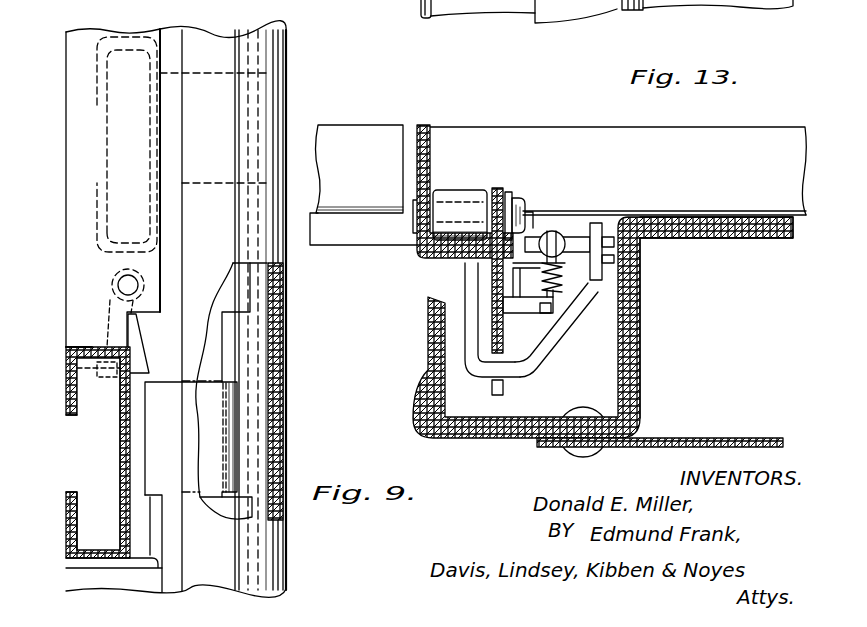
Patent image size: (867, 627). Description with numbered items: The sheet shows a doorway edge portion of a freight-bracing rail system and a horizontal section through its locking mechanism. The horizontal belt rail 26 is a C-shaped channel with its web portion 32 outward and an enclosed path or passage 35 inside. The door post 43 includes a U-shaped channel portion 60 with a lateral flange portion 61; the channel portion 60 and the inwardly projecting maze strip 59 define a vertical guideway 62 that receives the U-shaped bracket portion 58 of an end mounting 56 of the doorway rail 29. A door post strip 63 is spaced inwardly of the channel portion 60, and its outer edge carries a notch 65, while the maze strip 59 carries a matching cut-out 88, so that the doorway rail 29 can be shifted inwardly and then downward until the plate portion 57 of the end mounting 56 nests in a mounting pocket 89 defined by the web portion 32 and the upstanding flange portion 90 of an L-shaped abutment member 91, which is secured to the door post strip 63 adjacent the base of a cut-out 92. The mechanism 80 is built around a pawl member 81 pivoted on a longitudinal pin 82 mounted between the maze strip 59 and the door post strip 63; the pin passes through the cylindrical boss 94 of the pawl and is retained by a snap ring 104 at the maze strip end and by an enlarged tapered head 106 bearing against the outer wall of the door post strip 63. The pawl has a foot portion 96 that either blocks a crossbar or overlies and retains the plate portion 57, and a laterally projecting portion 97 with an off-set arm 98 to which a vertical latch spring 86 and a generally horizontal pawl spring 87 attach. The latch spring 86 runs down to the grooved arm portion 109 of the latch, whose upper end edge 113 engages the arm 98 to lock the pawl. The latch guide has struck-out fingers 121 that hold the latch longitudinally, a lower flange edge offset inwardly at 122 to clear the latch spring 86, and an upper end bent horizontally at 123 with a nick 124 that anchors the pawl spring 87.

In FIG. 9, the belt rail 26 is at (66, 374).
In FIG. 13, the belt rail 26 is at (541, 127).
In FIG. 9, the doorway rail 29 is at (97, 62).
In FIG. 13, the doorway rail 29 is at (343, 125).
In FIG. 9, the web portion 32 is at (121, 450).
In FIG. 9, the enclosed path or passage 35 is at (93, 415).
In FIG. 9, the door post 43 is at (284, 88).
In FIG. 13, the door post 43 is at (480, 440).
In FIG. 9, the end mounting 56 is at (210, 72).
In FIG. 13, the end mounting 56 is at (548, 350).
In FIG. 9, the plate portion 57 is at (180, 223).
In FIG. 13, the plate portion 57 is at (362, 230).
In FIG. 9, the bracket portion 58 is at (237, 433).
In FIG. 13, the bracket portion 58 is at (558, 331).
In FIG. 9, the maze strip 59 is at (281, 282).
In FIG. 13, the maze strip 59 is at (498, 190).
In FIG. 13, the channel portion 60 is at (428, 341).
In FIG. 13, the flange portion 61 is at (752, 236).
In FIG. 9, the vertical guideway or passage 62 is at (168, 38).
In FIG. 9, the door post strip 63 is at (66, 113).
In FIG. 13, the door post strip 63 is at (418, 147).
In FIG. 9, the notch 65 is at (160, 324).
In FIG. 9, the mechanism 80 is at (103, 278).
In FIG. 9, the pawl member 81 is at (141, 348).
In FIG. 13, the pawl member 81 is at (459, 190).
In FIG. 9, the pin 82 is at (138, 283).
In FIG. 13, the pin 82 is at (471, 210).
In FIG. 13, the latch spring 86 is at (548, 231).
In FIG. 13, the pawl spring 87 is at (560, 292).
In FIG. 9, the cut-out 88 is at (223, 340).
In FIG. 13, the cut-out 88 is at (480, 368).
In FIG. 9, the mounting pocket 89 is at (146, 553).
In FIG. 9, the upstanding flange portion 90 is at (153, 505).
In FIG. 9, the abutment member 91 is at (70, 563).
In FIG. 9, the cut-out 92 is at (66, 347).
In FIG. 13, the cylindrical boss 94 is at (444, 192).
In FIG. 9, the foot portion 96 is at (103, 374).
In FIG. 13, the laterally projecting portion 97 is at (521, 206).
In FIG. 13, the off-set arm 98 is at (562, 235).
In FIG. 13, the snap ring 104 is at (509, 195).
In FIG. 13, the tapered head 106 is at (410, 234).
In FIG. 13, the arm portion 109 is at (609, 236).
In FIG. 13, the upper end edge 113 is at (510, 262).
In FIG. 13, the struck-out fingers 121 is at (530, 230).
In FIG. 13, the offset 122 is at (640, 279).
In FIG. 13, the bent end 123 is at (533, 373).
In FIG. 13, the nick or groove 124 is at (552, 314).